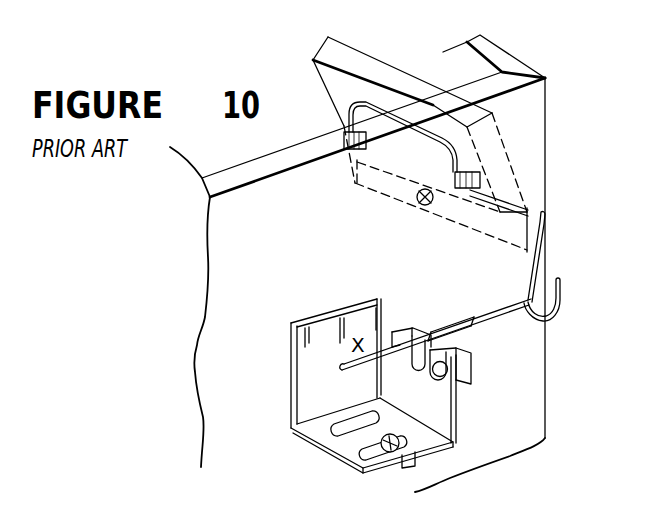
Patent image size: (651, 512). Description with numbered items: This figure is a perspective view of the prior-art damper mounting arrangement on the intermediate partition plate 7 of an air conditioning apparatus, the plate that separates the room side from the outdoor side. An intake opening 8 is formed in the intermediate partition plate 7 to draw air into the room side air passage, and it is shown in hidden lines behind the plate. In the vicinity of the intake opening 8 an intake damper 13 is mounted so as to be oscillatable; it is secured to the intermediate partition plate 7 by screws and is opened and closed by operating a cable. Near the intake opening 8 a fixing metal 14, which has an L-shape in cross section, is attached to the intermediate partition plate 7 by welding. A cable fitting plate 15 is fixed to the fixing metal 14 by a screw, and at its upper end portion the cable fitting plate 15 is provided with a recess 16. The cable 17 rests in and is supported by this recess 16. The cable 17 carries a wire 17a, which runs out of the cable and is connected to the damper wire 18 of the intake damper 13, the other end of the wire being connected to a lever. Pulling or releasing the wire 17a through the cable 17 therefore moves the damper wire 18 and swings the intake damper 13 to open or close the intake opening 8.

The intermediate partition plate 7 is at (547, 159).
The intake opening 8 is at (517, 139).
The intake damper 13 is at (322, 87).
The fixing metal 14 is at (443, 447).
The cable fitting plate 15 is at (453, 405).
The recess 16 is at (413, 328).
The cable 17 is at (463, 333).
The wire 17a is at (513, 310).
The damper wire 18 is at (559, 290).